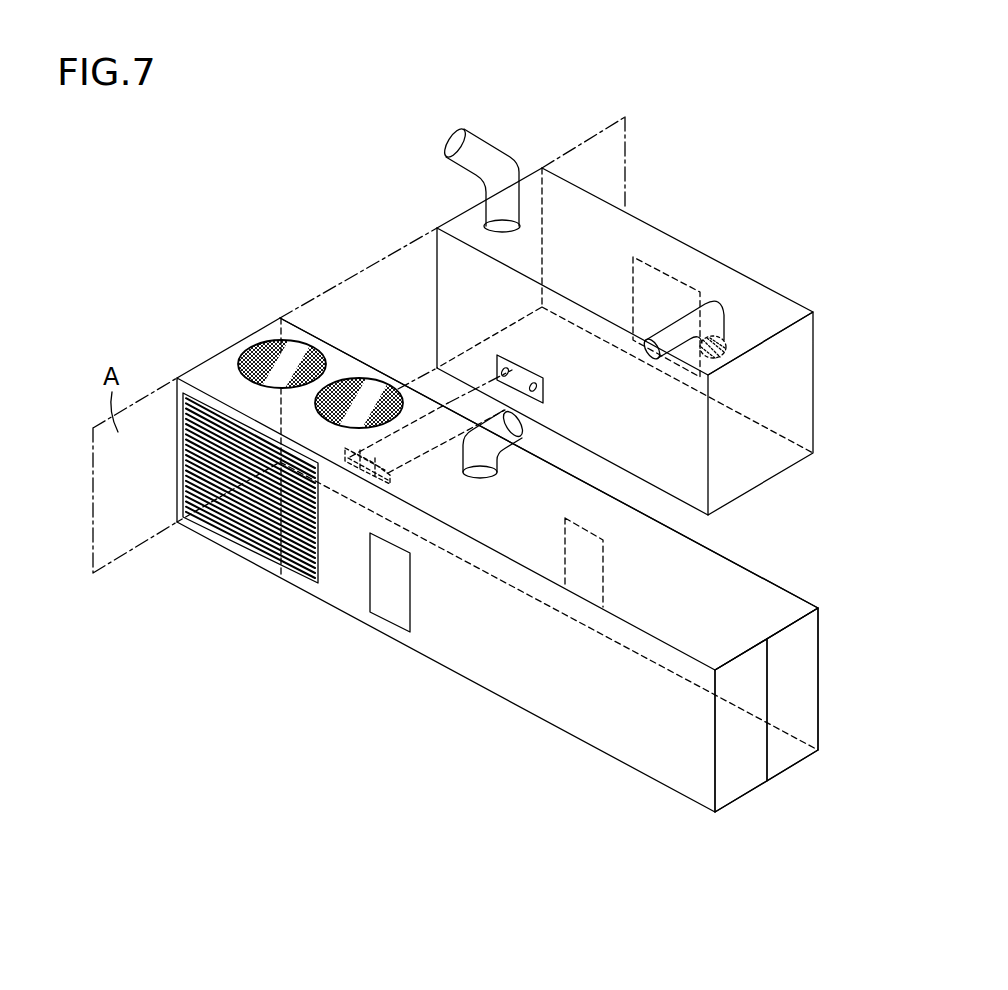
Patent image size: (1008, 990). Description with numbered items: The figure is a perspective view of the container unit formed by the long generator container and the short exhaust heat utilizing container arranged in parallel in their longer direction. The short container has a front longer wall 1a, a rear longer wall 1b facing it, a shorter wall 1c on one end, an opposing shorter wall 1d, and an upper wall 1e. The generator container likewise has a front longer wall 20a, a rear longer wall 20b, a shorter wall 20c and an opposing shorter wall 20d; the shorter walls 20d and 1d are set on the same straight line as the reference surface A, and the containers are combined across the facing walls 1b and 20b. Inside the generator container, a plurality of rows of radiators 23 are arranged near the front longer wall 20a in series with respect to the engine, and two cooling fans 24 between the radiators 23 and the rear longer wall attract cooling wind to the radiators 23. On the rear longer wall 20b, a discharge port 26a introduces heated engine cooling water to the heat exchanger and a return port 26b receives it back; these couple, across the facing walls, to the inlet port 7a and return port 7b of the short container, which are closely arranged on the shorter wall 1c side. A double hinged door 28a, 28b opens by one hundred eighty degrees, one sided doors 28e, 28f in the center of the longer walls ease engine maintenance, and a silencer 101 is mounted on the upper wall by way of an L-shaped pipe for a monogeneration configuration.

The front longer wall 1a is at (685, 236).
The rear longer wall 1b is at (454, 279).
The 20 f side shorter wall 1c is at (792, 378).
The 0 f side shorter wall 1d is at (525, 175).
The upper wall 1e is at (629, 238).
The silencer 101 is at (672, 313).
The inlet port 7a is at (536, 385).
The return port 7b is at (507, 370).
The front longer wall 20a is at (486, 667).
The rear longer wall 20b is at (776, 577).
The 40 f side shorter wall 20c is at (806, 697).
The 0 f side shorter wall 20d is at (213, 346).
The radiators 23 is at (283, 576).
The cooling fans 24 is at (308, 350).
The discharge port 26a is at (395, 480).
The return port 26b is at (347, 485).
The double hinged door 28a is at (788, 750).
The double hinged door 28b is at (735, 783).
The one sided opening and closing door 28e is at (384, 634).
The one sided opening and closing door 28f is at (595, 570).